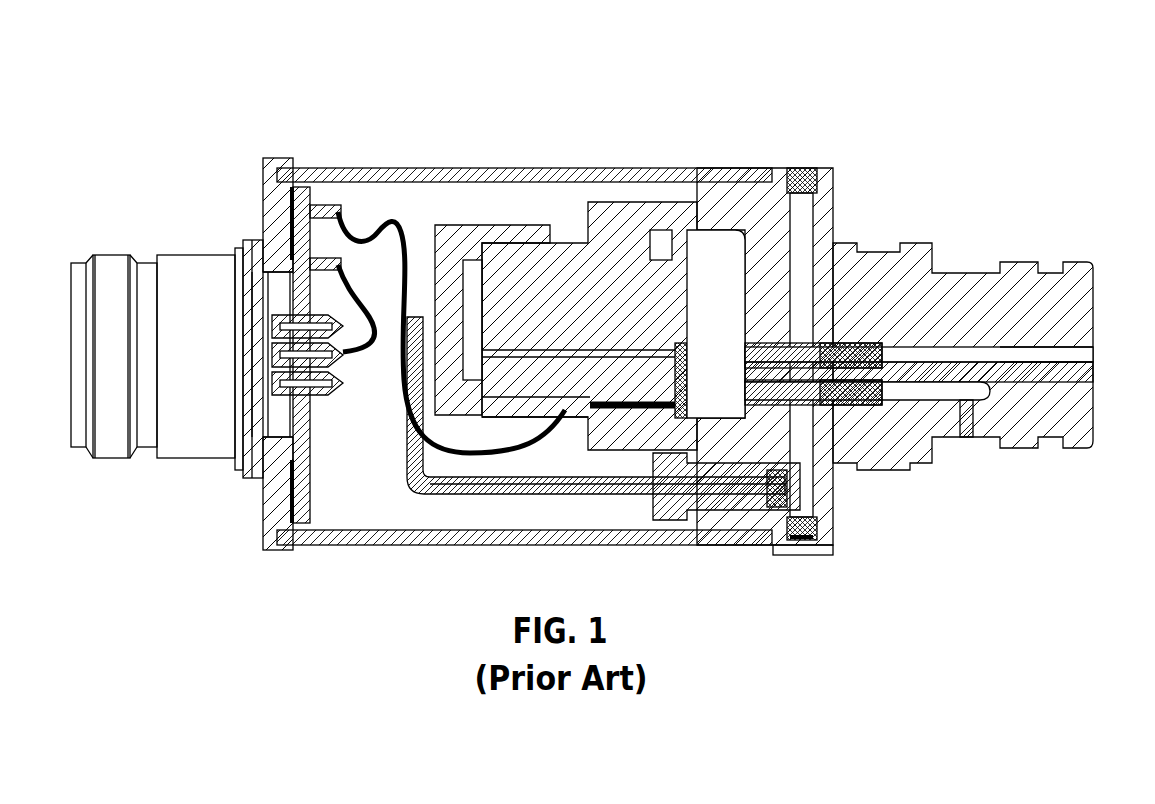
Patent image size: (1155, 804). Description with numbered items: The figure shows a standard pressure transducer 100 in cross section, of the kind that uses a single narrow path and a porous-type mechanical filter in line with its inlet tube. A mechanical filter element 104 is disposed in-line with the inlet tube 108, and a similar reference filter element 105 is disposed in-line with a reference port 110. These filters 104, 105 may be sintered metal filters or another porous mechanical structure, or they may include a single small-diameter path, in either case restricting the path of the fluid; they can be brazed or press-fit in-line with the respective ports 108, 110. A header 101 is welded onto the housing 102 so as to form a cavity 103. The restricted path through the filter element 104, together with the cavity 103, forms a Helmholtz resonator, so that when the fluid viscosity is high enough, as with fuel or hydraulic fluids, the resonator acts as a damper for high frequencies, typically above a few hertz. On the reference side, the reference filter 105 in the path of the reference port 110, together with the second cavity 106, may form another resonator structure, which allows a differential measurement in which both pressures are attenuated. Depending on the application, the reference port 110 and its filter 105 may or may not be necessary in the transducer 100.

The pressure transducer 100 is at (540, 56).
The header 101 is at (623, 227).
The housing 102 is at (937, 300).
The cavity 103 is at (713, 257).
The mechanical filter element 104 is at (867, 343).
The reference filter element 105 is at (850, 395).
The second cavity 106 is at (472, 268).
The inlet tube 108 is at (1080, 357).
The reference port 110 is at (967, 430).